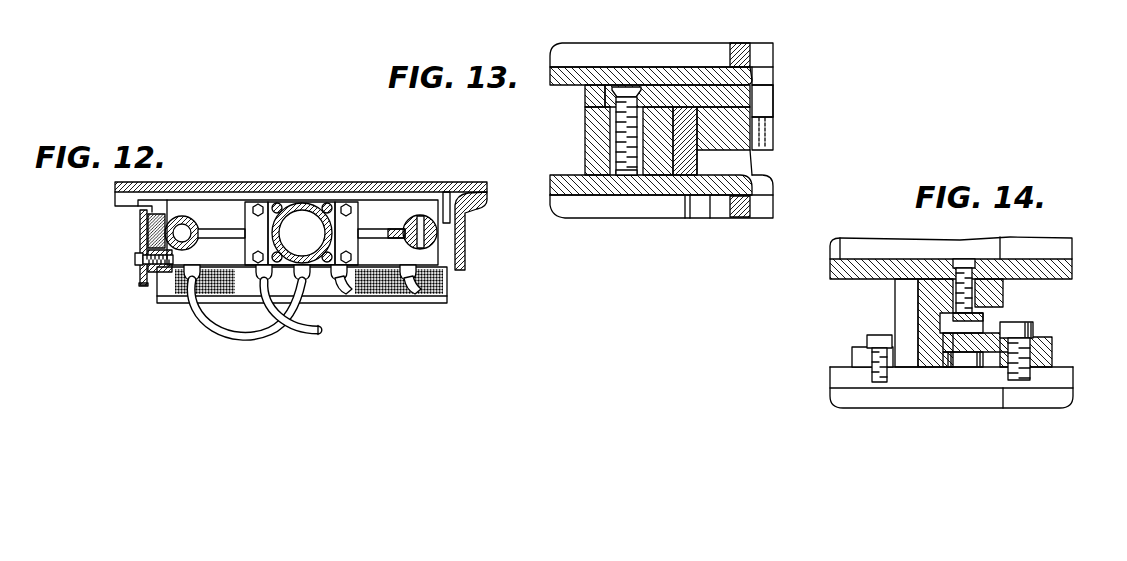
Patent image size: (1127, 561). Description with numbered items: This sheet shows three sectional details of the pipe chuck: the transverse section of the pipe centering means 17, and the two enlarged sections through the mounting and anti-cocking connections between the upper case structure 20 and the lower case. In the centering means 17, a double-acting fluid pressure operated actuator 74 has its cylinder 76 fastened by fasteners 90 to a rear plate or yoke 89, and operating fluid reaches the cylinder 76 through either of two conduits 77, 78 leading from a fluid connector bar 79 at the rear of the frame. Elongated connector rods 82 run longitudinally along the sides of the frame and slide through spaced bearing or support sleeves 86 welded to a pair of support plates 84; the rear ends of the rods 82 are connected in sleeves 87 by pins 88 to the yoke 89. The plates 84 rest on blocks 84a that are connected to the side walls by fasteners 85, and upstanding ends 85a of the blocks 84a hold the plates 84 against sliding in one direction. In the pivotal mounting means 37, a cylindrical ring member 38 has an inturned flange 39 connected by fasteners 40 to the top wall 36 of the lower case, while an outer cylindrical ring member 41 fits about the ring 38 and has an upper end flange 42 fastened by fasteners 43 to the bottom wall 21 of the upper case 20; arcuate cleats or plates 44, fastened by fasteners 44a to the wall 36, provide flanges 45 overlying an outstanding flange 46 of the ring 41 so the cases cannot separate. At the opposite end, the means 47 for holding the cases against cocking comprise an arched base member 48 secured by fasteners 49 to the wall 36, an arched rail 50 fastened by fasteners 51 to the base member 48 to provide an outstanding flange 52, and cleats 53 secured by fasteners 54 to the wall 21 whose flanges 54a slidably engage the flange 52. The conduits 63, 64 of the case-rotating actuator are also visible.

In FIG. 12, the pipe centering means 17 is at (140, 257).
In FIG. 13, the housing or case structure 20 is at (745, 50).
In FIG. 13, the bottom wall 21 is at (566, 74).
In FIG. 14, the bottom wall 21 is at (1068, 270).
In FIG. 13, the upper wall 36 is at (560, 185).
In FIG. 14, the upper wall 36 is at (840, 378).
In FIG. 14, the means for mounting the upper case on the lower case 37 is at (868, 321).
In FIG. 14, the cylindrical ring member 38 is at (912, 300).
In FIG. 14, the inturned flange 39 is at (866, 357).
In FIG. 14, the fasteners 40 is at (880, 385).
In FIG. 14, the outer cylindrical ring member 41 is at (930, 334).
In FIG. 14, the upper end flange 42 is at (1000, 299).
In FIG. 14, the fasteners 43 is at (962, 258).
In FIG. 14, the arcuate cleats or plates 44 is at (1040, 353).
In FIG. 14, the fasteners 44a is at (1022, 331).
In FIG. 14, the flanges 45 is at (970, 354).
In FIG. 14, the outstanding flange 46 is at (943, 369).
In FIG. 13, the means for holding the cases against cocking 47 is at (573, 122).
In FIG. 13, the arched base member 48 is at (598, 152).
In FIG. 13, the fasteners 49 is at (620, 180).
In FIG. 13, the arched rail 50 is at (590, 95).
In FIG. 13, the fasteners 51 is at (628, 92).
In FIG. 13, the outstanding flange 52 is at (683, 100).
In FIG. 13, the cleats 53 is at (705, 151).
In FIG. 13, the fasteners 54 is at (755, 103).
In FIG. 13, the flanges 54a is at (690, 120).
In FIG. 12, the conduit 63 is at (417, 292).
In FIG. 12, the conduit 64 is at (347, 291).
In FIG. 12, the fluid pressure operated actuator 74 is at (322, 194).
In FIG. 12, the cylinder 76 is at (300, 204).
In FIG. 12, the conduit 77 is at (313, 334).
In FIG. 12, the conduit 78 is at (246, 334).
In FIG. 12, the fluid connector bar 79 is at (419, 304).
In FIG. 12, the connector rods 82 is at (191, 233).
In FIG. 12, the support plates 84 is at (158, 232).
In FIG. 12, the blocks 84a is at (160, 270).
In FIG. 12, the fasteners 85 is at (139, 272).
In FIG. 12, the upstanding ends 85a is at (150, 211).
In FIG. 12, the bearing or support sleeves 86 is at (186, 224).
In FIG. 12, the sleeves 87 is at (428, 240).
In FIG. 12, the pins 88 is at (416, 216).
In FIG. 12, the rear plate or yoke 89 is at (366, 202).
In FIG. 12, the fasteners 90 is at (258, 206).